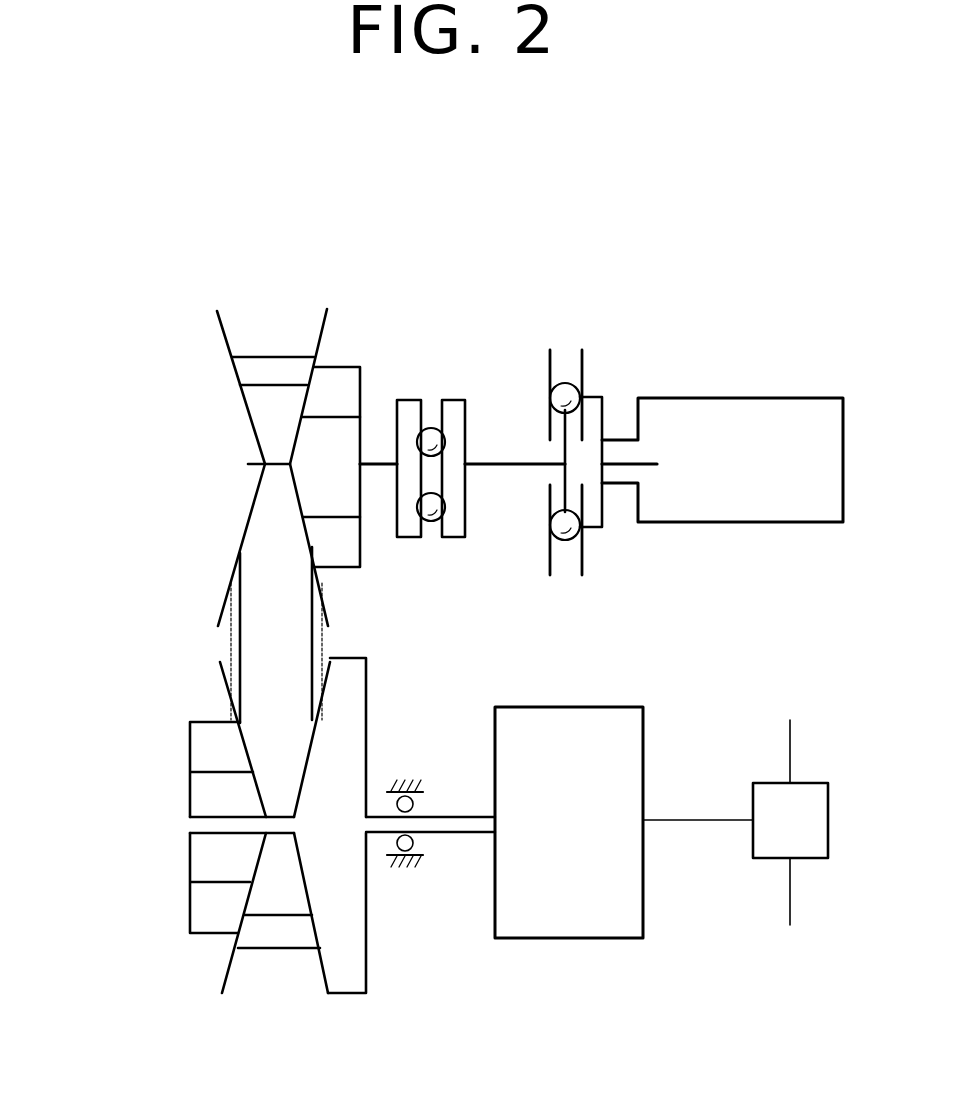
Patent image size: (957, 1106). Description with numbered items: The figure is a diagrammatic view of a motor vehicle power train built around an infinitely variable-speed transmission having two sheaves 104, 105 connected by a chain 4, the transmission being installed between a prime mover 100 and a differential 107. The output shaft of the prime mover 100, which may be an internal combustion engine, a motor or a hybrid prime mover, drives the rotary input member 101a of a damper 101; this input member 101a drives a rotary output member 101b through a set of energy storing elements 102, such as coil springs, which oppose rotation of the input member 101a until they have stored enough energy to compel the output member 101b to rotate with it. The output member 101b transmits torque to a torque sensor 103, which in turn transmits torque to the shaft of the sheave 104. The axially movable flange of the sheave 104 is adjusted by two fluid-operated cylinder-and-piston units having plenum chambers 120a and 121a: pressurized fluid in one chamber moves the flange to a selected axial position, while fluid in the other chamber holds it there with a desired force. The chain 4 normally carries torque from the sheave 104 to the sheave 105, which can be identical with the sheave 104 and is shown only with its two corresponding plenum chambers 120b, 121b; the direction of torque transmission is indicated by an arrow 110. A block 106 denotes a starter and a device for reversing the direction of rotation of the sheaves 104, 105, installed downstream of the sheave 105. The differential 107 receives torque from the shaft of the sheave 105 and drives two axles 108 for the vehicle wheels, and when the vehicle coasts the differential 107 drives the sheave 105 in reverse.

The chain 4 is at (260, 644).
The prime mover 100 is at (778, 415).
The damper 101 is at (591, 447).
The rotary input member 101a is at (585, 558).
The rotary output member 101b is at (563, 450).
The energy storing elements 102 is at (567, 383).
The torque sensor 103 is at (433, 380).
The sheave 104 is at (214, 381).
The sheave 105 is at (192, 977).
The starter and reversing device 106 is at (550, 974).
The differential 107 is at (767, 836).
The axles 108 is at (790, 748).
The arrow 110 is at (412, 590).
The plenum chamber 120a is at (337, 375).
The plenum chamber 121a is at (313, 447).
The plenum chamber 120b is at (203, 862).
The plenum chamber 121b is at (203, 915).